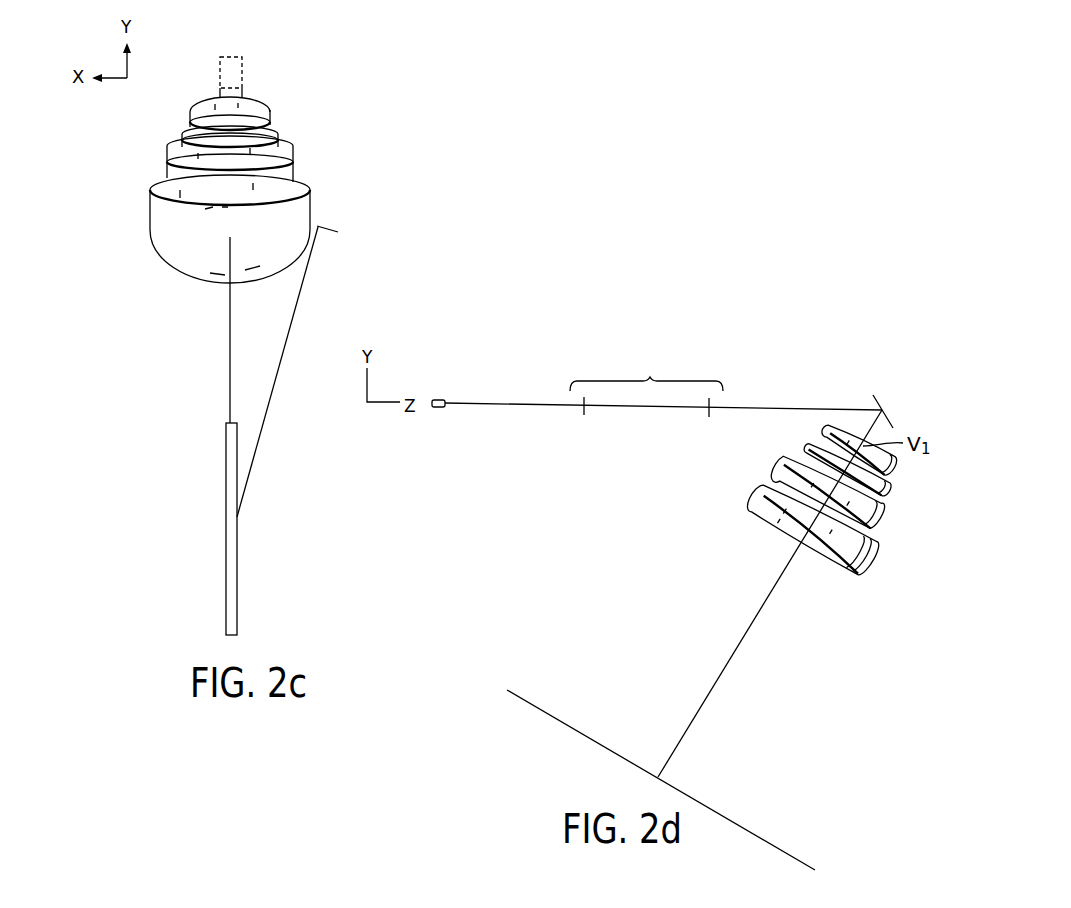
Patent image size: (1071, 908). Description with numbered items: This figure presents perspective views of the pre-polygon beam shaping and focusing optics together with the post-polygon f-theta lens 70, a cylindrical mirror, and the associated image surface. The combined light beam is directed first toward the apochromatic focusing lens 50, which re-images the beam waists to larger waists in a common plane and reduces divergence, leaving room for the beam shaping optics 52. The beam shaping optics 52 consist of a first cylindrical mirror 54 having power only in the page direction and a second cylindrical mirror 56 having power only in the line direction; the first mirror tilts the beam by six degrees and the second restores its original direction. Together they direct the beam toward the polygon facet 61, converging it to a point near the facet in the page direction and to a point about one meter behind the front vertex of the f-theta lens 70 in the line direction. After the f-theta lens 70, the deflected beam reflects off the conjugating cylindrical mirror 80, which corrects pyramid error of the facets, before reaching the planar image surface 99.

In FIG. 2D, the apochromatic focusing lens 50 is at (437, 409).
In FIG. 2D, the beam shaping optics 52 is at (646, 371).
In FIG. 2C, the first cylindrical mirror 54 is at (212, 80).
In FIG. 2D, the first cylindrical mirror 54 is at (708, 414).
In FIG. 2D, the second cylindrical mirror 56 is at (583, 411).
In FIG. 2C, the polygon facet 61 is at (242, 70).
In FIG. 2D, the polygon facet 61 is at (876, 397).
In FIG. 2C, the f-theta lens 70 is at (134, 174).
In FIG. 2D, the f-theta lens 70 is at (747, 469).
In FIG. 2C, the conjugating cylindrical mirror 80 is at (226, 460).
In FIG. 2D, the conjugating cylindrical mirror 80 is at (587, 737).
In FIG. 2C, the image surface 99 is at (330, 228).
In FIG. 2D, the image surface 99 is at (757, 388).